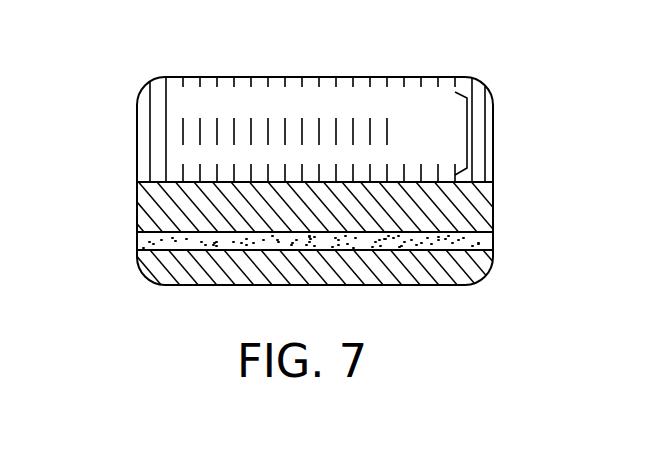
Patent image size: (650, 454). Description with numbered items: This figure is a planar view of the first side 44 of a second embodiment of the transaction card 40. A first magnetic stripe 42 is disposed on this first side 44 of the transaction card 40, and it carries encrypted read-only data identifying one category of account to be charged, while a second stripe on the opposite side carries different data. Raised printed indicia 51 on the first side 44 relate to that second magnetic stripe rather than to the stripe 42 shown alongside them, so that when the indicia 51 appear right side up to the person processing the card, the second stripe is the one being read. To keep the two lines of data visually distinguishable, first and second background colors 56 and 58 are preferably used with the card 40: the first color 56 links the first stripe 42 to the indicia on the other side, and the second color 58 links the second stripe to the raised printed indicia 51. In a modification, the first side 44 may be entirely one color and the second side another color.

The transaction card 40 is at (243, 72).
The second background color 58 is at (147, 113).
The raised printed indicia 51 is at (467, 123).
The first side 44 is at (140, 181).
The first magnetic stripe 42 is at (140, 240).
The first background color 56 is at (180, 285).